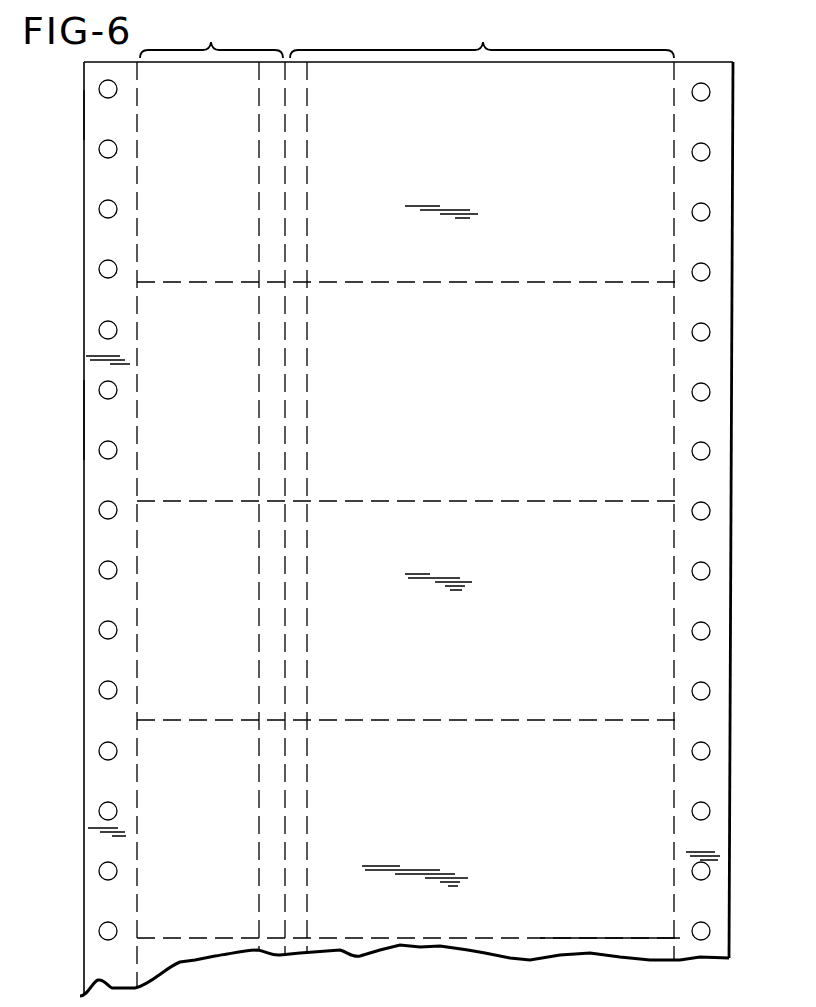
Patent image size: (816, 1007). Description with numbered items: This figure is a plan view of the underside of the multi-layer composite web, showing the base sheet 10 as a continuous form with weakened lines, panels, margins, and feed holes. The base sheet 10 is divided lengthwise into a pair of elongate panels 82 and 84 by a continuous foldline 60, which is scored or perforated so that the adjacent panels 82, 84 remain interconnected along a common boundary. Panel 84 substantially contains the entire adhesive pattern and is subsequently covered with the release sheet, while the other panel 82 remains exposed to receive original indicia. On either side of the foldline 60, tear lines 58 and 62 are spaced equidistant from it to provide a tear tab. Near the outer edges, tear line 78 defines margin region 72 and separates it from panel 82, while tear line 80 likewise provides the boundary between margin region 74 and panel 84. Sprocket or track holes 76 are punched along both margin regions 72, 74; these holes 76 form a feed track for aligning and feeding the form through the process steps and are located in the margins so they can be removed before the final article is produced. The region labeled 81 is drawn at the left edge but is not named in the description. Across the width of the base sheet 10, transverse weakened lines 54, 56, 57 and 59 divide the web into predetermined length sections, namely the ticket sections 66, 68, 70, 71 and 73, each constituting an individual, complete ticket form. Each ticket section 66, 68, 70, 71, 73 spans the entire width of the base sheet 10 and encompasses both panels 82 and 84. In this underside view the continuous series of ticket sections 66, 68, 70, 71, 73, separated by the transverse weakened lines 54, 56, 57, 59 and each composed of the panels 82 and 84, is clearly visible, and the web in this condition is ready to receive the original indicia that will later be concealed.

The base sheet 10 is at (393, 956).
The weakened line 54 is at (478, 283).
The weakened line 56 is at (461, 501).
The weakened line 57 is at (479, 720).
The tear line 58 is at (307, 166).
The weakened line 59 is at (453, 940).
The foldline 60 is at (285, 132).
The tear line 62 is at (259, 208).
The ticket section 66 is at (486, 140).
The ticket section 68 is at (487, 348).
The ticket section 70 is at (481, 554).
The ticket section 71 is at (442, 775).
The margin region 72 is at (726, 128).
The ticket section 73 is at (541, 952).
The margin region 74 is at (97, 120).
The sprocket holes 76 is at (99, 326).
The tear line 78 is at (673, 372).
The tear line 80 is at (138, 396).
The left margin strip 81 is at (84, 420).
The panel 82 is at (482, 37).
The panel 84 is at (211, 37).